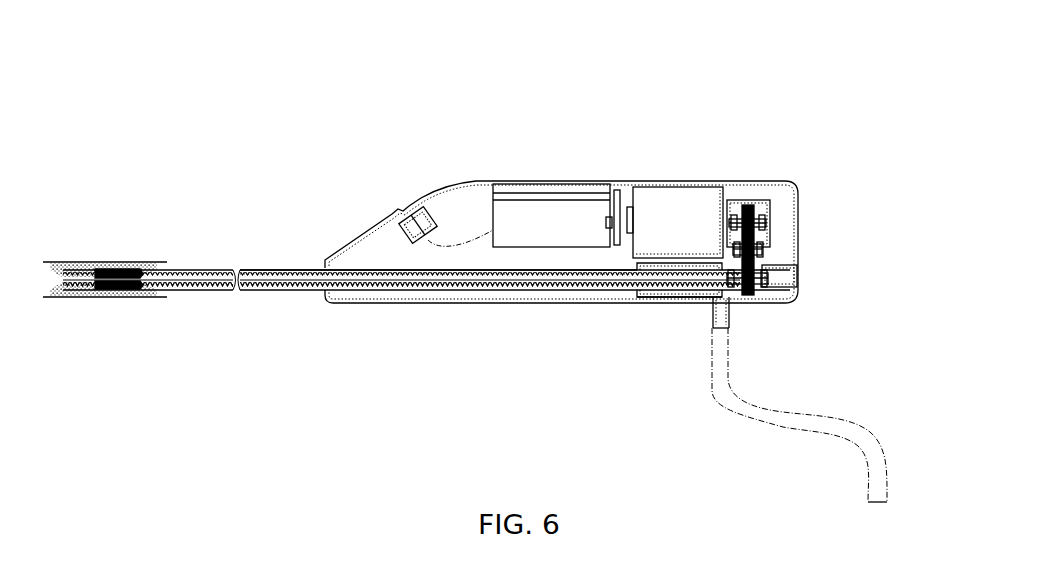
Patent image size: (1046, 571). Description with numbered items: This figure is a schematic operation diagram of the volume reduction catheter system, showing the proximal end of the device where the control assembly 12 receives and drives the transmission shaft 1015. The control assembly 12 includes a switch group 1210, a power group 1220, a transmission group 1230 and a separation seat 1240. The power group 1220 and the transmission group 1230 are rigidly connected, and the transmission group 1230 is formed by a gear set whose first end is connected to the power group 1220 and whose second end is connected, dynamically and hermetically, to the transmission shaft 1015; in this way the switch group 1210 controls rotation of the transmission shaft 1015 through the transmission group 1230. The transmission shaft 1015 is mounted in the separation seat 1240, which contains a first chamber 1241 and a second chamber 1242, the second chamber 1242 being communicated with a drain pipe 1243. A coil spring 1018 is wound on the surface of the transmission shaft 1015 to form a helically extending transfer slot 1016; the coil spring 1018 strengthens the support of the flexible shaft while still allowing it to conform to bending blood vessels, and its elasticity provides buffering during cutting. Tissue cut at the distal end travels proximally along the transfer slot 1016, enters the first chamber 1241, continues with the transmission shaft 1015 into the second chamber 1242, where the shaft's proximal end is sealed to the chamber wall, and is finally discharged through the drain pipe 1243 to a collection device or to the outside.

The control assembly 12 is at (724, 100).
The transmission shaft 1015 is at (250, 293).
The transfer slot 1016 is at (215, 265).
The coil spring 1018 is at (193, 265).
The switch group 1210 is at (407, 205).
The power group 1220 is at (673, 202).
The transmission group 1230 is at (753, 206).
The separation seat 1240 is at (603, 293).
The first chamber 1241 is at (446, 289).
The second chamber 1242 is at (672, 294).
The drain pipe 1243 is at (723, 320).